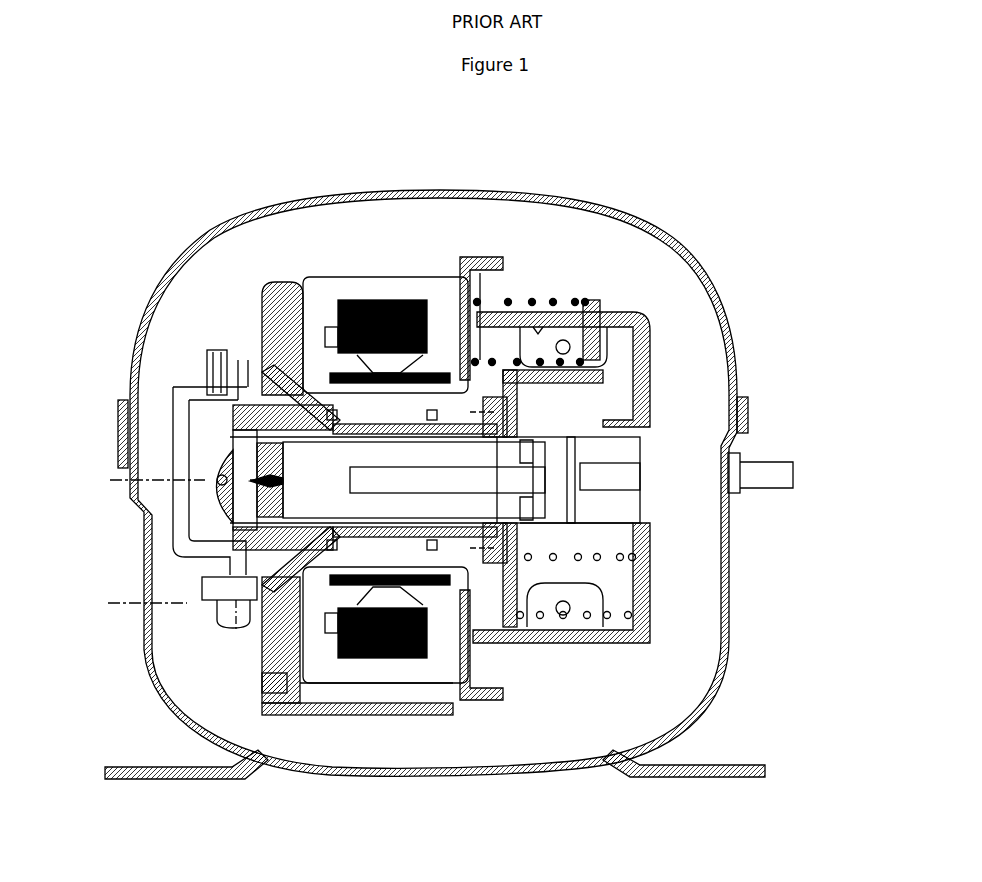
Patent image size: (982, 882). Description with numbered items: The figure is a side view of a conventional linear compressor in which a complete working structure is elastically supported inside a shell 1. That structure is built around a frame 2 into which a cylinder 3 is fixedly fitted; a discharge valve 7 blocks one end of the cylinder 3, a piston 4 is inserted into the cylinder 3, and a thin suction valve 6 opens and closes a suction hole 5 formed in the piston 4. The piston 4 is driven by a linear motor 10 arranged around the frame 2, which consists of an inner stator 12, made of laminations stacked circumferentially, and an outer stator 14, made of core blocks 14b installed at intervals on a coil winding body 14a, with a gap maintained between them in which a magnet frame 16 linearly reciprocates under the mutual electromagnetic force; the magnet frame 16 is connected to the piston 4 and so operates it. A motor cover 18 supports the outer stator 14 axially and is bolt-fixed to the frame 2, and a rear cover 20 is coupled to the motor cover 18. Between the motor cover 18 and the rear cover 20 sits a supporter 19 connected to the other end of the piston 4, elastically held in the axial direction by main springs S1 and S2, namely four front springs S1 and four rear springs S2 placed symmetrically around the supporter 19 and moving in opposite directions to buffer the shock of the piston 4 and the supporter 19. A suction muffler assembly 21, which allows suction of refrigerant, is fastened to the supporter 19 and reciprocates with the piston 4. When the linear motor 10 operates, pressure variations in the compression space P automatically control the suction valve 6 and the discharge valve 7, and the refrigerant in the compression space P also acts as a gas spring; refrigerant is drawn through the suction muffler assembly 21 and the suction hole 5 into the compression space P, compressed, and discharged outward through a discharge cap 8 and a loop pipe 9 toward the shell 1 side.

The shell 1 is at (731, 362).
The frame 2 is at (290, 292).
The cylinder 3 is at (363, 530).
The piston 4 is at (390, 520).
The suction hole 5 is at (273, 508).
The suction valve 6 is at (187, 497).
The discharge valve 7 is at (212, 467).
The discharge cap 8 is at (193, 440).
The loop pipe 9 is at (217, 380).
The linear motor 10 is at (338, 118).
The inner stator 12 is at (428, 410).
The outer stator 14 is at (375, 157).
The coil winding body 14a is at (358, 308).
The core blocks 14b is at (320, 310).
The magnet frame 16 is at (402, 372).
The motor cover 18 is at (498, 257).
The supporter 19 is at (598, 297).
The rear cover 20 is at (640, 352).
The suction muffler assembly 21 is at (597, 528).
The front springs S1 is at (510, 300).
The rear springs S2 is at (628, 636).
The compression space P is at (239, 468).